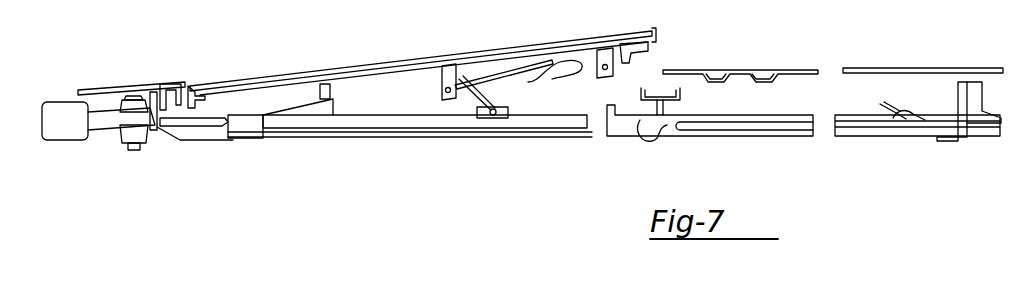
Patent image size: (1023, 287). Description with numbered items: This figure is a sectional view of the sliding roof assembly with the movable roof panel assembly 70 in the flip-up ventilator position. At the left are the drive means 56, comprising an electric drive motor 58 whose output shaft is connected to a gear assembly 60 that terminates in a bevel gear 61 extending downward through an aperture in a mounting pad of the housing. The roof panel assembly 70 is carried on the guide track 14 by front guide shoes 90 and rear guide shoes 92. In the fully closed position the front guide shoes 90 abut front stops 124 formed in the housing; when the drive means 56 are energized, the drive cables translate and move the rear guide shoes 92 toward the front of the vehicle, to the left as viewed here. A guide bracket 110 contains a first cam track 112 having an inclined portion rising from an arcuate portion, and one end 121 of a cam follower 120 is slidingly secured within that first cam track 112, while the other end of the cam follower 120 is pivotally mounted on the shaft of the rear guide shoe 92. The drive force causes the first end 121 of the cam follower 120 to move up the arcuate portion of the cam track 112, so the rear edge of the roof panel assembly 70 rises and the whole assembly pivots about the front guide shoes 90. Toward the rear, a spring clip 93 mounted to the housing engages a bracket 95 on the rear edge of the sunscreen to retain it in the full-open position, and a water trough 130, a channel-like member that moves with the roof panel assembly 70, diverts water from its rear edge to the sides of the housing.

The track rail 14 is at (107, 88).
The drive means 56 is at (100, 156).
The electric drive motor 58 is at (60, 130).
The gear assembly 60 is at (140, 114).
The bevel gear 61 is at (131, 150).
The movable roof panel assembly 70 is at (375, 31).
The front guide shoes 90 is at (307, 110).
The rear guide shoes 92 is at (483, 114).
The spring clip 93 is at (927, 111).
The bracket 95 is at (900, 117).
The guide bracket 110 is at (555, 83).
The first cam track 112 is at (488, 77).
The cam follower 120 is at (472, 106).
The first end of cam follower 121 is at (462, 77).
The front stops 124 is at (237, 113).
The water trough 130 is at (658, 98).